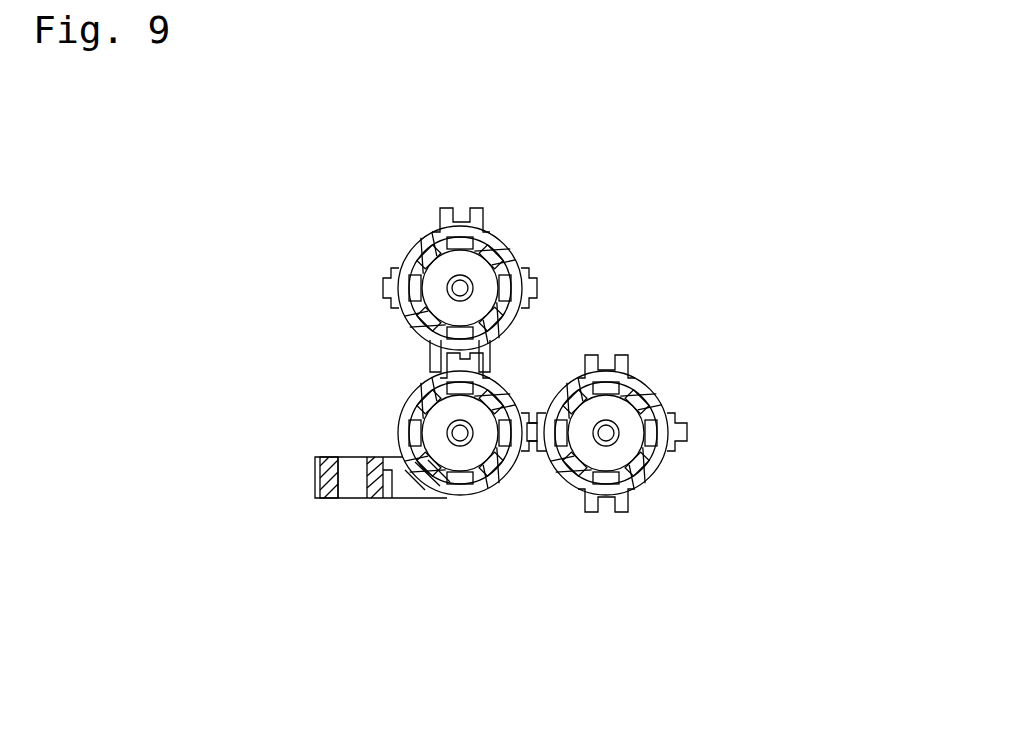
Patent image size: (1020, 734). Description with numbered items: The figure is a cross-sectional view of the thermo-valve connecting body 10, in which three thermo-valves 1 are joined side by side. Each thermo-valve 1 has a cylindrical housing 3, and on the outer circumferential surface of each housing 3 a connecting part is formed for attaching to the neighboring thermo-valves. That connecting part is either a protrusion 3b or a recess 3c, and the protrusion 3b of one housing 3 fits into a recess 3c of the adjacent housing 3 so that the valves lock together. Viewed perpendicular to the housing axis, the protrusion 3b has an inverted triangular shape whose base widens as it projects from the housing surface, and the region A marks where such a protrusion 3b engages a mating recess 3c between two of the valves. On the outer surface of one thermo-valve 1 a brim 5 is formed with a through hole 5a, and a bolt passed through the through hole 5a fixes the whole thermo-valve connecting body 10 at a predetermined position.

The thermo-valve connecting body 10 is at (276, 191).
The thermo-valve 1 is at (414, 212).
The housing 3 is at (512, 242).
The protrusion 3b is at (384, 297).
The recess 3c is at (479, 206).
The brim 5 is at (378, 499).
The through hole 5a is at (352, 499).
The engagement region A is at (516, 356).